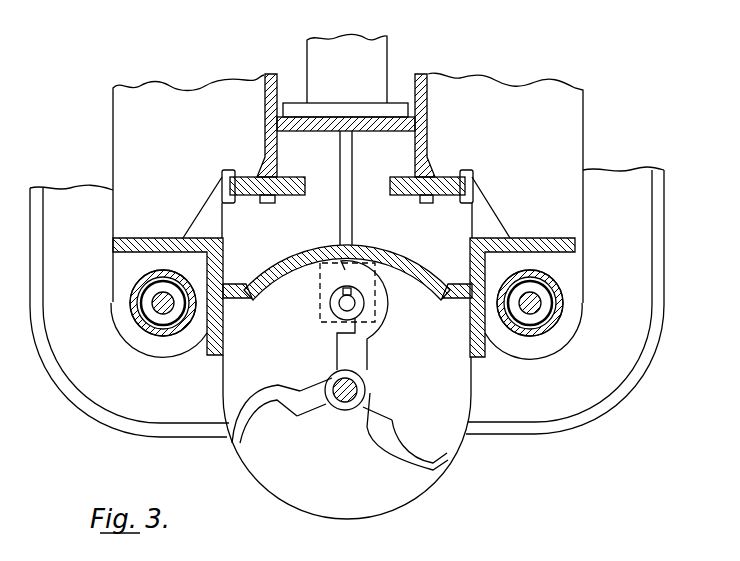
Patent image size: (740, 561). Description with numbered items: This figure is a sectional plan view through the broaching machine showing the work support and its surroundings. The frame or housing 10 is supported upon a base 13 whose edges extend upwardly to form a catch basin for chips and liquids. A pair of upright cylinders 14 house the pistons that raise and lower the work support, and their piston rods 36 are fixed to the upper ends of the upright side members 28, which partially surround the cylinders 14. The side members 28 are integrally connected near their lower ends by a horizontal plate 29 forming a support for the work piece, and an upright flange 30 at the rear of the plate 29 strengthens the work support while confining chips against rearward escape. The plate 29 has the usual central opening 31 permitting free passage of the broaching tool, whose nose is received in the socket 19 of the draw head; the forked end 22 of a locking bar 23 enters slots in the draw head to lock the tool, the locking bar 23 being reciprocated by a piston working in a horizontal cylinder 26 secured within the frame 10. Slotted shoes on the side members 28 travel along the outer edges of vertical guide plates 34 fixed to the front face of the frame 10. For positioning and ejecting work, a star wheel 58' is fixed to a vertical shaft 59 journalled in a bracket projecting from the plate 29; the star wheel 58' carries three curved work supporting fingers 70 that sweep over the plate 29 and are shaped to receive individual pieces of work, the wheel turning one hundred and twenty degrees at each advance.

The frame or housing 10 is at (557, 133).
The base 13 is at (595, 392).
The upright cylinders 14 is at (142, 280).
The socket 19 is at (387, 330).
The forked end 22 is at (320, 283).
The locking bar 23 is at (348, 152).
The horizontal cylinder 26 is at (366, 66).
The upright side members 28 is at (213, 258).
The horizontal plate 29 is at (240, 373).
The upright flange 30 is at (392, 256).
The central opening 31 is at (338, 307).
The vertical guide plates 34 is at (250, 177).
The piston rods 36 is at (153, 303).
The star wheel 58' is at (375, 390).
The vertical shaft 59 is at (336, 378).
The curved work supporting fingers 70 is at (393, 297).